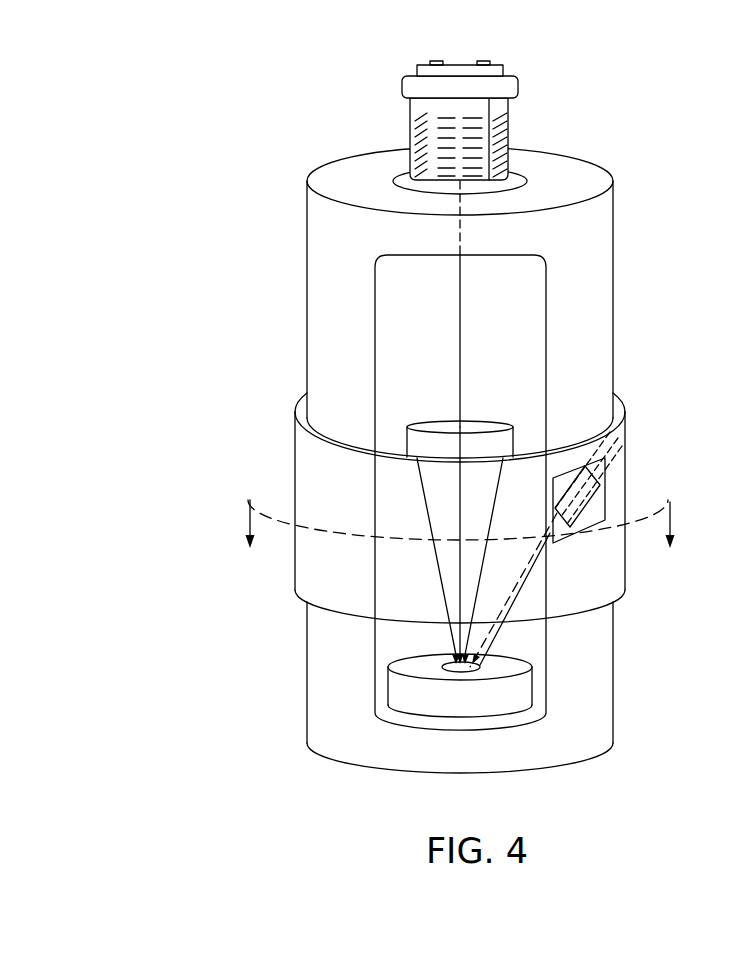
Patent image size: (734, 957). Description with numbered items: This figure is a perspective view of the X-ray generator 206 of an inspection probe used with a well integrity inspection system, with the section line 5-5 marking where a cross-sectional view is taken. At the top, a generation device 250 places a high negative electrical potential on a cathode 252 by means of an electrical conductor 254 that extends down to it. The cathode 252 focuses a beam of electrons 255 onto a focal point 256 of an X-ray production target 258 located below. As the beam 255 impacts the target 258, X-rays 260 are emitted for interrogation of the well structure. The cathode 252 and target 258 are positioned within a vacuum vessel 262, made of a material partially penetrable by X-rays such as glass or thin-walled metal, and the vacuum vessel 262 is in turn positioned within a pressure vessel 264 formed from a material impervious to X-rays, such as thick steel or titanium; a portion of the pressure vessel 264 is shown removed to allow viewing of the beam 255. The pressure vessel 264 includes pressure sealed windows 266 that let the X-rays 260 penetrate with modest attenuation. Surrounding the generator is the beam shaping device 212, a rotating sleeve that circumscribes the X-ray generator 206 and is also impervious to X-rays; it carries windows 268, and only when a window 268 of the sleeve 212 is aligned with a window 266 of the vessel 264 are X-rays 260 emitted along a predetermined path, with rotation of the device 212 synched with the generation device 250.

The X-ray generator 206 is at (268, 176).
The beam shaping device 212 is at (302, 465).
The generation device 250 is at (505, 121).
The cathode 252 is at (512, 430).
The electrical conductor 254 is at (462, 277).
The beam of electrons 255 is at (437, 568).
The focal point 256 is at (442, 667).
The X-ray production target 258 is at (523, 695).
The X-rays 260 is at (613, 403).
The vacuum vessel 262 is at (423, 298).
The pressure vessel 264 is at (605, 212).
The pressure sealed window 266 is at (592, 486).
The window 268 is at (590, 528).
The section line 5- 5 is at (461, 538).